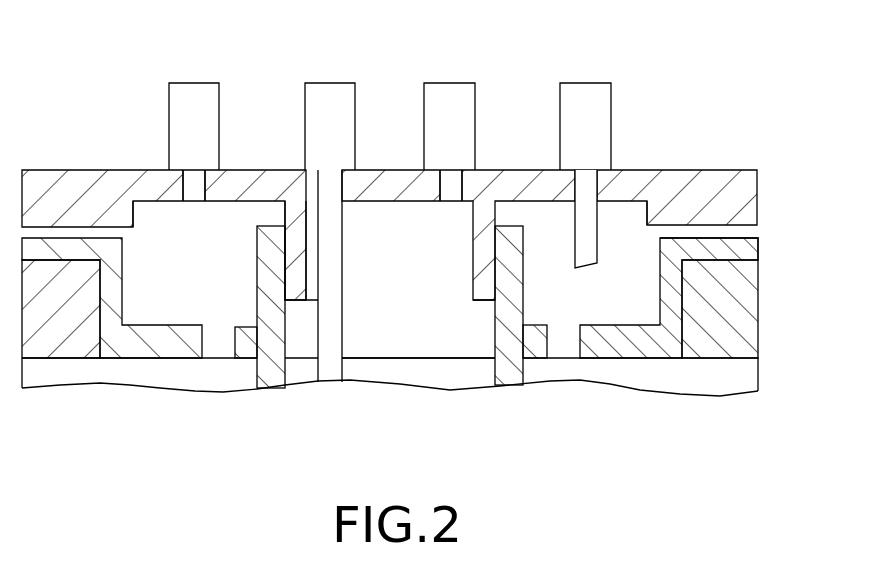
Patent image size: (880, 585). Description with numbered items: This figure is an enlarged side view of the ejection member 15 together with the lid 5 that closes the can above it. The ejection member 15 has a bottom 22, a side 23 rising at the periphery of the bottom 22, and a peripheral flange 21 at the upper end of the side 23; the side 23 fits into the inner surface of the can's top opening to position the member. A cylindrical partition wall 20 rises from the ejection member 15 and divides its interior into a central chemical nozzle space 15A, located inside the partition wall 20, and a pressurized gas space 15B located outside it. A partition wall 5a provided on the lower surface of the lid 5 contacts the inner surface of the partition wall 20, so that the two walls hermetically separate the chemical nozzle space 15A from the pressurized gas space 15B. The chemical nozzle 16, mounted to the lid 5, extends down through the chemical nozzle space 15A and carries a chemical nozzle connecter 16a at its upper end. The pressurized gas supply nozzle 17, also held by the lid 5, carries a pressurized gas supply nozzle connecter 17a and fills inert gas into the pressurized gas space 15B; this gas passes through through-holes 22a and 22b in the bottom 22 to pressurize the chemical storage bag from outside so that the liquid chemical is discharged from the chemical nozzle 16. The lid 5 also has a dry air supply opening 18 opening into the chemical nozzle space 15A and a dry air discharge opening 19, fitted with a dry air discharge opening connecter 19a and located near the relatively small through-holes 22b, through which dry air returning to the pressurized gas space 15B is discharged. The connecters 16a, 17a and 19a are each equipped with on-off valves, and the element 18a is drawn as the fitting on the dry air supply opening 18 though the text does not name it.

The lid 5 is at (72, 170).
The partition wall 5a is at (295, 290).
The ejection member 15 is at (145, 348).
The chemical nozzle space 15A is at (392, 235).
The pressurized gas space 15B is at (148, 247).
The chemical nozzle 16 is at (332, 312).
The chemical nozzle connecter 16a is at (330, 90).
The pressurized gas supply nozzle 17 is at (585, 187).
The pressurized gas supply nozzle connecter 17a is at (588, 90).
The dry air supply opening 18 is at (448, 187).
The terminal tab 18a is at (452, 90).
The dry air discharge opening 19 is at (197, 186).
The dry air discharge opening connecter 19a is at (195, 90).
The cylindrical partition wall 20 is at (267, 270).
The peripheral flange 21 is at (747, 250).
The bottom 22 is at (647, 350).
The through-holes 22a is at (565, 348).
The through-holes 22b is at (218, 348).
The side 23 is at (670, 298).